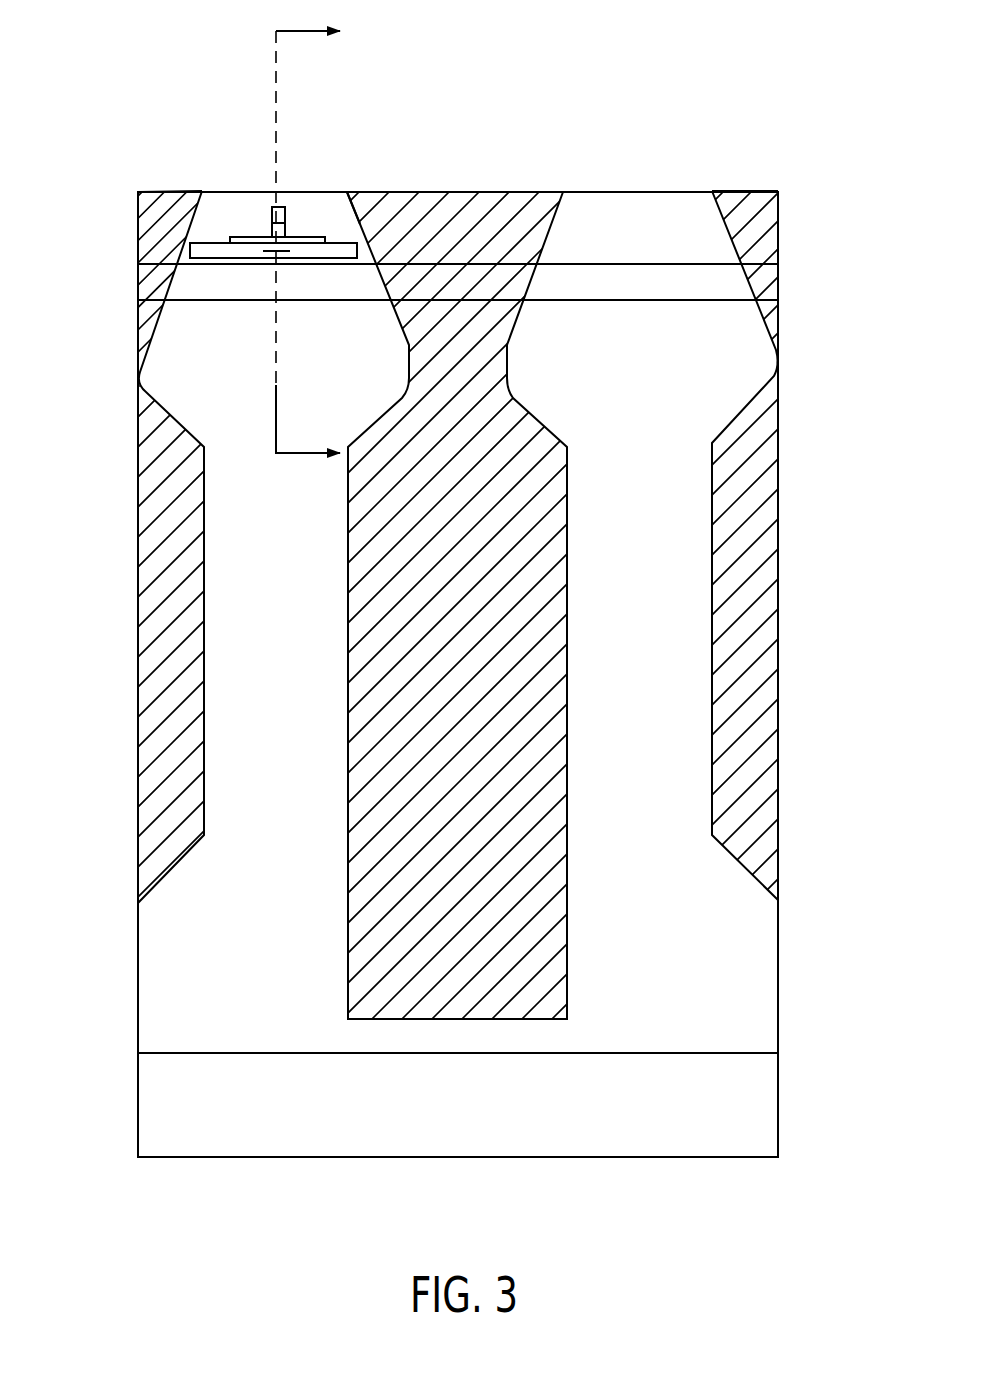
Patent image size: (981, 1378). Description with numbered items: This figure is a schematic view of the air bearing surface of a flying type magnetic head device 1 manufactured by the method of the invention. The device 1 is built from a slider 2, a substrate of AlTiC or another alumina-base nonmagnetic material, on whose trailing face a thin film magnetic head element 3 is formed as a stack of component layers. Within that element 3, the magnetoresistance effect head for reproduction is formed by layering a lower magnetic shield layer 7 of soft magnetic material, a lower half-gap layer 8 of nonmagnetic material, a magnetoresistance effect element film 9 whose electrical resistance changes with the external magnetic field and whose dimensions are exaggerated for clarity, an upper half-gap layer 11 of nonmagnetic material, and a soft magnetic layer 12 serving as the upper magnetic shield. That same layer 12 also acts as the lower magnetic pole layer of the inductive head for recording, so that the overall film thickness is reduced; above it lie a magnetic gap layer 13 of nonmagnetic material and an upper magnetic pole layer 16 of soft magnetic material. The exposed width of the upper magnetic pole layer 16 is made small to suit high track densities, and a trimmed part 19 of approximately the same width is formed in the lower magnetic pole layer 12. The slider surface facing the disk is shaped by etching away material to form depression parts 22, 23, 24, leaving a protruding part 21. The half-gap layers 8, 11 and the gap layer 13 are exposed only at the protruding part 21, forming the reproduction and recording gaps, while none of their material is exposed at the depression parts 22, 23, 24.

The magnetic head device 1 is at (720, 127).
The slider 2 is at (138, 582).
The thin film magnetic head element 3 is at (280, 190).
The lower magnetic shield layer 7 is at (243, 259).
The lower half-gap layer 8 is at (193, 264).
The magnetoresistance effect element film 9 is at (275, 262).
The upper half-gap layer 11 is at (340, 242).
The lower magnetic pole layer 12 is at (252, 238).
The magnetic gap layer 13 is at (272, 213).
The upper magnetic pole layer 16 is at (290, 236).
The trimmed part 19 is at (305, 237).
The protruding part 21 is at (388, 337).
The depression part 22 is at (490, 210).
The depression part 23 is at (148, 690).
The depression part 24 is at (148, 222).